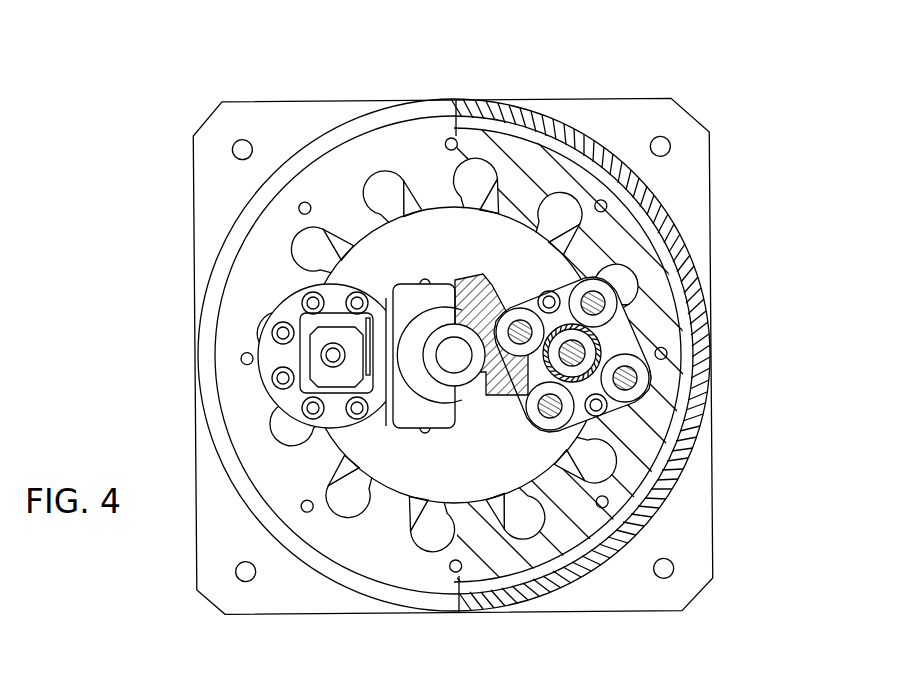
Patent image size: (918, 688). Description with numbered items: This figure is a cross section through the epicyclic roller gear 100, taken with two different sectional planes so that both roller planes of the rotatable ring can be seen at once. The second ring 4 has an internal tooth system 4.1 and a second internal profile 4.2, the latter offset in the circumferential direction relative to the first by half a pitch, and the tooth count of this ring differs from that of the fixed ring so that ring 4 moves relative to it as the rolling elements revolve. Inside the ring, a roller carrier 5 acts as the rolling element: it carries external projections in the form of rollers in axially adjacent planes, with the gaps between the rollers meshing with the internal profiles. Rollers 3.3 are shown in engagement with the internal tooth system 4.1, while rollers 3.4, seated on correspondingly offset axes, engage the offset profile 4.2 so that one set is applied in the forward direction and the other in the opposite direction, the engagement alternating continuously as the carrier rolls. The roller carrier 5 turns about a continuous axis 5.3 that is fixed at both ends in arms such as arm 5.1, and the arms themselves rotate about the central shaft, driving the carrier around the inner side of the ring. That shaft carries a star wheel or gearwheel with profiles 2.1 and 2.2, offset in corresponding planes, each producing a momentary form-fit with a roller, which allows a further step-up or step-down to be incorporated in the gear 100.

The epicyclic roller gear 100 is at (658, 80).
The second ring 4 is at (664, 300).
The internal tooth system 4.1 is at (556, 218).
The second internal profile 4.2 is at (580, 256).
The profile 2.1 is at (472, 426).
The profile 2.2 is at (478, 285).
The rollers 3.3 is at (556, 278).
The rollers 3.4 is at (259, 328).
The roller carrier 5 is at (512, 300).
The arm 5.1 is at (388, 300).
The axis 5.3 is at (600, 340).